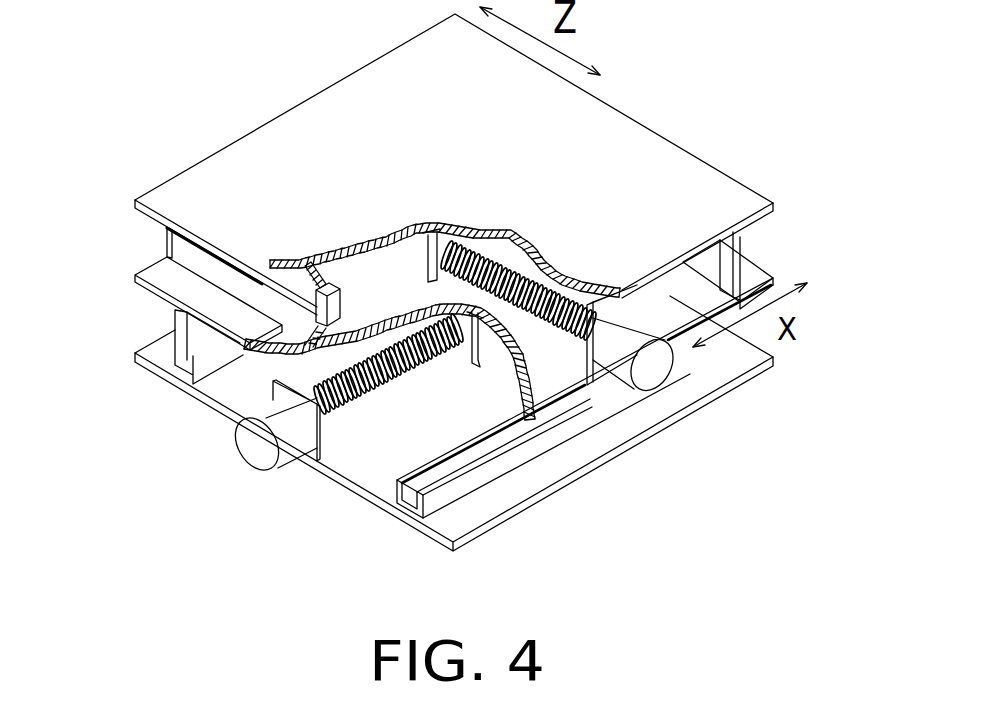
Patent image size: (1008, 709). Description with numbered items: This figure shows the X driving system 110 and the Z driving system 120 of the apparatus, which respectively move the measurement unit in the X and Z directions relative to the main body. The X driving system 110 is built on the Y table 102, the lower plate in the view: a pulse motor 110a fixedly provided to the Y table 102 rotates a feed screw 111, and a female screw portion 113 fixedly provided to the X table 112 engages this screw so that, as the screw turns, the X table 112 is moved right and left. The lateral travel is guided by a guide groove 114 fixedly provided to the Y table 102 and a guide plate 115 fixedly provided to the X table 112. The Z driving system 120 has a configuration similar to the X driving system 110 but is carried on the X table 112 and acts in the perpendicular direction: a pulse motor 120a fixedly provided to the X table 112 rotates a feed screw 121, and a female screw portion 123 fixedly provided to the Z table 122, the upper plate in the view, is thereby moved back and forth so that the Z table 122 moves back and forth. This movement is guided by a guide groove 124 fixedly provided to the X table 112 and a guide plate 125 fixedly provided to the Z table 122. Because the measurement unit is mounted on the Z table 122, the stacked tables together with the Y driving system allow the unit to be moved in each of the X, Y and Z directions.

The Y table 102 is at (727, 363).
The X driving system 110 is at (183, 440).
The pulse motor 110a is at (283, 445).
The feed screw 111 is at (382, 390).
The X table 112 is at (175, 280).
The female screw portion 113 is at (463, 352).
The guide groove 114 is at (515, 452).
The guide plate 115 is at (176, 320).
The Z driving system 120 is at (668, 106).
The pulse motor 120a is at (647, 367).
The feed screw 121 is at (565, 300).
The Z table 122 is at (722, 208).
The female screw portion 123 is at (433, 238).
The guide groove 124 is at (340, 340).
The guide plate 125 is at (318, 275).